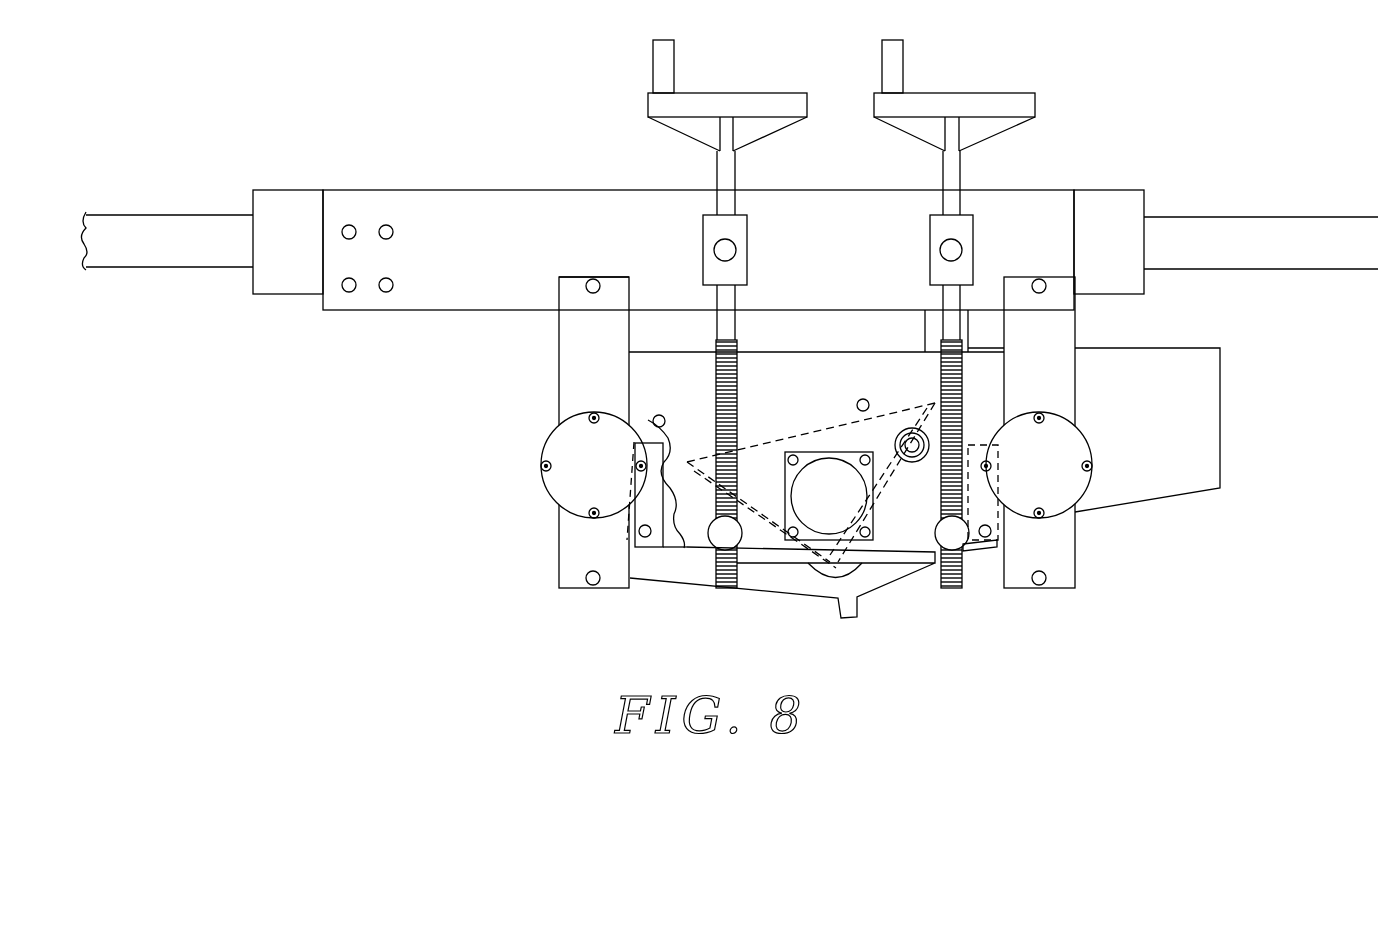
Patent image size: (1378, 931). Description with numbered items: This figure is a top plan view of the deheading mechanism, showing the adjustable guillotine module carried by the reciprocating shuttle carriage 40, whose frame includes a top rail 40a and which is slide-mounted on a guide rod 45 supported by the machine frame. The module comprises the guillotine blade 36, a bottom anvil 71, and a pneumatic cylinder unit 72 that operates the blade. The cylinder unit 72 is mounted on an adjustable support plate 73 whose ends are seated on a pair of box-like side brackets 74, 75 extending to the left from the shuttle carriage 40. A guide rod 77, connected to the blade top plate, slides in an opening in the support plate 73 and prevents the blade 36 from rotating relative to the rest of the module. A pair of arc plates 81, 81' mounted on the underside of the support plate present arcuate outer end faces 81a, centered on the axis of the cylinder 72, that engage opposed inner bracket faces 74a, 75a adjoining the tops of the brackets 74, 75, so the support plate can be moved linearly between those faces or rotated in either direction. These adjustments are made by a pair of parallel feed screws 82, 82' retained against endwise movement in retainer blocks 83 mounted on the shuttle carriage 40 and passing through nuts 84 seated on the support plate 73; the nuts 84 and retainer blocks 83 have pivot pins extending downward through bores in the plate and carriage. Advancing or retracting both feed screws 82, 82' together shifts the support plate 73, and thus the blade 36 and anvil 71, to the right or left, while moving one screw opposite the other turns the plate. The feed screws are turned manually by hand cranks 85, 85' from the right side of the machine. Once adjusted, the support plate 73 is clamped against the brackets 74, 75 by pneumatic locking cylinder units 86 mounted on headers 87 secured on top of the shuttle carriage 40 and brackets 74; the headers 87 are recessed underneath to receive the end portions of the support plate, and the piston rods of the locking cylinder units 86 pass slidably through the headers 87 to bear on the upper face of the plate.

The shuttle carriage 40 is at (461, 178).
The top rail 40a is at (540, 216).
The guide rod 45 is at (1268, 198).
The hand crank 85 is at (954, 95).
The hand crank 85' is at (727, 95).
The retainer block 83 is at (928, 243).
The adjustable support plate 73 is at (822, 378).
The header 87 is at (565, 349).
The inner bracket face 75a is at (638, 399).
The feed screw 82 is at (919, 464).
The feed screw 82' is at (745, 464).
The inner bracket face 74a is at (992, 408).
The guide rod 77 is at (896, 443).
The pneumatic locking cylinder unit 86 is at (556, 479).
The arcuate outer end face 81a is at (624, 502).
The pneumatic cylinder unit 72 is at (842, 503).
The nut 84 is at (940, 517).
The guillotine blade 36 is at (811, 490).
The side bracket 75 is at (556, 569).
The arc plate 81' is at (666, 520).
The bottom anvil 71 is at (770, 582).
The arc plate 81 is at (980, 536).
The side bracket 74 is at (1075, 553).